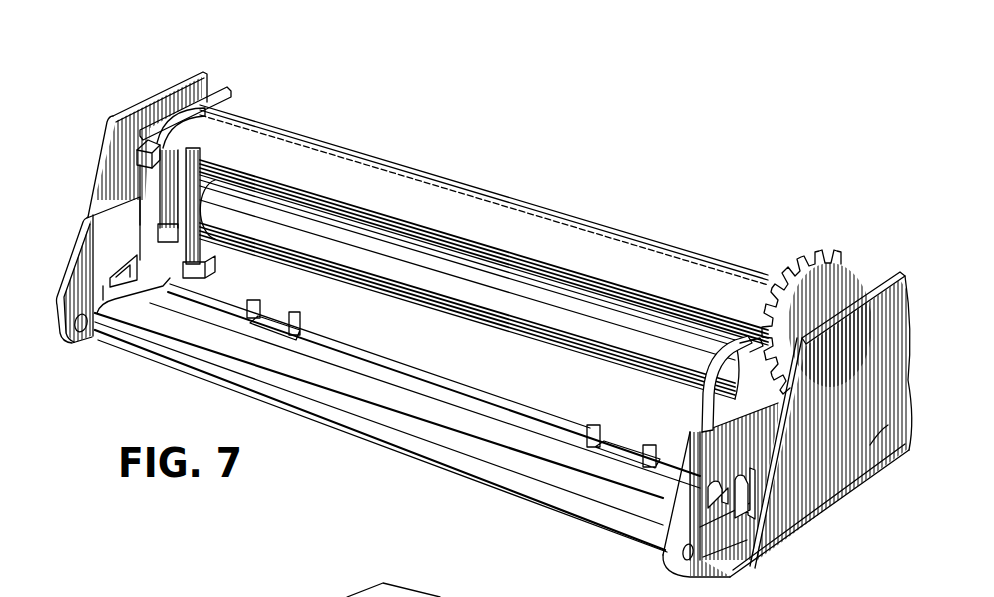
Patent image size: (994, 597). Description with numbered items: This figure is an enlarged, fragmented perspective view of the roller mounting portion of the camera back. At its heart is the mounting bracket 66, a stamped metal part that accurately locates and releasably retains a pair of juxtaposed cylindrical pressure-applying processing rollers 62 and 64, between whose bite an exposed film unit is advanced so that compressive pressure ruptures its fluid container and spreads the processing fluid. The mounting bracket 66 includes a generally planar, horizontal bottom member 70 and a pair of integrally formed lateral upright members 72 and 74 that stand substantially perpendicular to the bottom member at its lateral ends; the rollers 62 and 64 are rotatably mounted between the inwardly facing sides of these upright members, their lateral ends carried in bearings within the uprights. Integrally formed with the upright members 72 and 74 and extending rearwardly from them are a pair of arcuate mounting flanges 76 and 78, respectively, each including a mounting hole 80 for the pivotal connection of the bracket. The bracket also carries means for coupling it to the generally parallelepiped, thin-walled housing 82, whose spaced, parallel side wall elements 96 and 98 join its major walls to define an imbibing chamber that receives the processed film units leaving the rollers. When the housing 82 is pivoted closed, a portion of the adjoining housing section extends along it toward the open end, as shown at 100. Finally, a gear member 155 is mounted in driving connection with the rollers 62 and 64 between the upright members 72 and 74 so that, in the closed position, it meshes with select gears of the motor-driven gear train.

The pressure-applying processing roller 62 is at (522, 200).
The pressure-applying processing roller 64 is at (640, 320).
The mounting bracket 66 is at (177, 105).
The bottom member 70 is at (430, 410).
The lateral upright member 72 is at (776, 547).
The lateral upright member 74 is at (141, 150).
The arcuate mounting flange 76 is at (677, 535).
The arcuate mounting flange 78 is at (88, 240).
The mounting hole 80 is at (82, 333).
The housing 82 is at (857, 511).
The side wall element 96 is at (873, 447).
The side wall element 98 is at (156, 111).
The portion of housing section extending along housing 100 is at (702, 418).
The gear member 155 is at (856, 252).